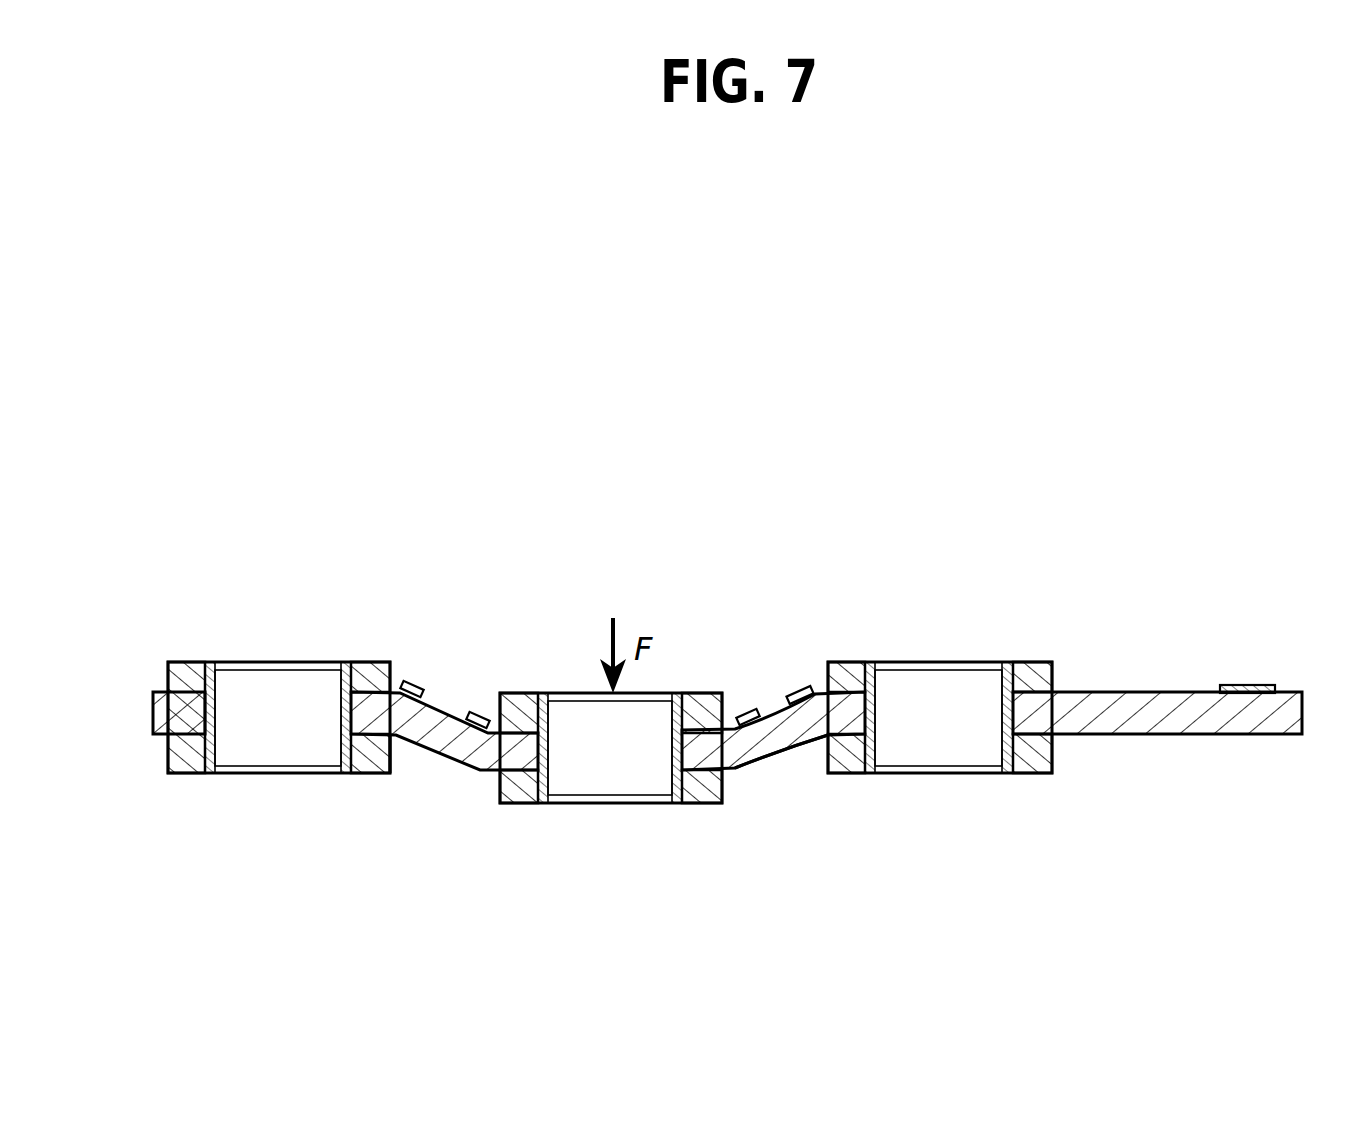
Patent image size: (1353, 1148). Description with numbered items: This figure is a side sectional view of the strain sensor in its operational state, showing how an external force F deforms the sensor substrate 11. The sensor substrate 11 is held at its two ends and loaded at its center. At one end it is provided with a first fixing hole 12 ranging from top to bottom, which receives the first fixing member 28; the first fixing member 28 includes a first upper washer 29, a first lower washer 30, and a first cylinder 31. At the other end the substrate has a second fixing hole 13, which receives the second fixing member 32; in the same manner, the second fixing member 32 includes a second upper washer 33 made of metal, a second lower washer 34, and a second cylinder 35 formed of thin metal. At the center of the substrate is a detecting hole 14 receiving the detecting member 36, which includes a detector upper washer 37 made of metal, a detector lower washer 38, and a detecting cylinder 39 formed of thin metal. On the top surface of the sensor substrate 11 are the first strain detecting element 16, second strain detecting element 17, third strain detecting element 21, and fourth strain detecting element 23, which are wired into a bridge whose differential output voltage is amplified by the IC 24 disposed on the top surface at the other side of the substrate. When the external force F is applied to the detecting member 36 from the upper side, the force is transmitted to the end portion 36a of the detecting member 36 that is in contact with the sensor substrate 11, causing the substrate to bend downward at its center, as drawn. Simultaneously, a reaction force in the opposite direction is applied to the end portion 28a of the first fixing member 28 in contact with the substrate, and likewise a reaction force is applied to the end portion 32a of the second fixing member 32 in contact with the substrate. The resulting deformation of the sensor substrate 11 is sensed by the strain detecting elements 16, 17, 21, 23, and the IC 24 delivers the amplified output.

The sensor substrate 11 is at (160, 734).
The first fixing hole 12 is at (190, 763).
The second fixing hole 13 is at (1005, 680).
The detecting hole 14 is at (665, 800).
The first strain detecting element 16 is at (790, 700).
The second strain detecting element 17 is at (472, 708).
The third strain detecting element 21 is at (417, 686).
The fourth strain detecting element 23 is at (752, 726).
The IC 24 is at (1247, 685).
The first fixing member 28 is at (367, 663).
The end portion 28a is at (395, 752).
The first upper washer 29 is at (378, 670).
The first lower washer 30 is at (365, 760).
The first cylinder 31 is at (337, 762).
The second fixing member 32 is at (1028, 675).
The end portion 32a is at (832, 738).
The second upper washer 33 is at (1043, 665).
The second lower washer 34 is at (1035, 763).
The second cylinder 35 is at (882, 742).
The detecting member 36 is at (697, 700).
The end portion 36a is at (486, 716).
The detector upper washer 37 is at (715, 700).
The detector lower washer 38 is at (706, 788).
The detecting cylinder 39 is at (539, 800).